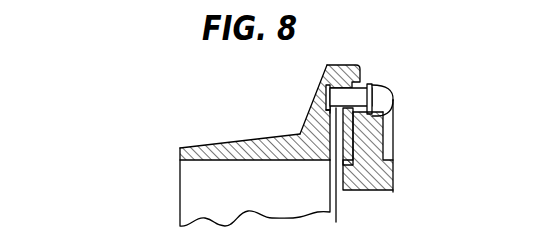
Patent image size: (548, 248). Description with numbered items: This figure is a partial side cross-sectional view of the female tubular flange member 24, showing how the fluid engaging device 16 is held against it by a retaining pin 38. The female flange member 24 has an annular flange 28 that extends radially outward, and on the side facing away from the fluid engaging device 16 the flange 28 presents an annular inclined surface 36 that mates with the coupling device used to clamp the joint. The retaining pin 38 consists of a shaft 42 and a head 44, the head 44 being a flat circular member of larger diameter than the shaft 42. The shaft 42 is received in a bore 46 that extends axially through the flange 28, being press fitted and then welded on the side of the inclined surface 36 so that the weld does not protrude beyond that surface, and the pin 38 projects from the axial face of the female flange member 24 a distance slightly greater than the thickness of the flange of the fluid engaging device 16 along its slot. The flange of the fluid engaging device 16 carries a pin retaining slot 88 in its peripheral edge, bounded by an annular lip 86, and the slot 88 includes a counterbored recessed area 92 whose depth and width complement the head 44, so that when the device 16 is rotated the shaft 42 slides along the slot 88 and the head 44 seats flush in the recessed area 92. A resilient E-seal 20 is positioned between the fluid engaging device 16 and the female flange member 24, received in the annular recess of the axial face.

The fluid engaging device 16 is at (396, 177).
The E-seal 20 is at (337, 182).
The female tubular flange member 24 is at (225, 135).
The annular flange 28 is at (345, 62).
The inclined surface 36 is at (327, 73).
The retaining pin 38 is at (326, 97).
The shaft 42 is at (360, 82).
The head 44 is at (392, 105).
The bore 46 is at (326, 108).
The annular lip 86 is at (393, 90).
The pin retaining slot 88 is at (401, 98).
The counterbored recessed area 92 is at (393, 128).